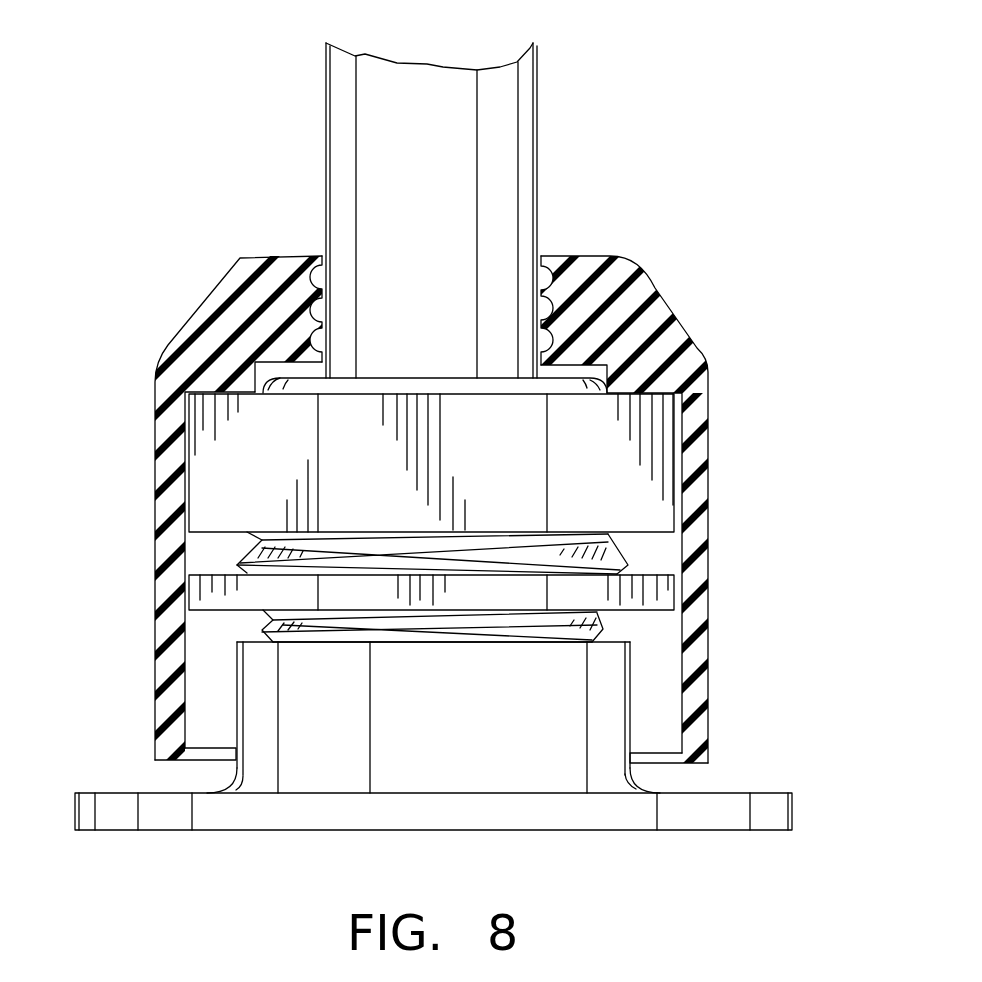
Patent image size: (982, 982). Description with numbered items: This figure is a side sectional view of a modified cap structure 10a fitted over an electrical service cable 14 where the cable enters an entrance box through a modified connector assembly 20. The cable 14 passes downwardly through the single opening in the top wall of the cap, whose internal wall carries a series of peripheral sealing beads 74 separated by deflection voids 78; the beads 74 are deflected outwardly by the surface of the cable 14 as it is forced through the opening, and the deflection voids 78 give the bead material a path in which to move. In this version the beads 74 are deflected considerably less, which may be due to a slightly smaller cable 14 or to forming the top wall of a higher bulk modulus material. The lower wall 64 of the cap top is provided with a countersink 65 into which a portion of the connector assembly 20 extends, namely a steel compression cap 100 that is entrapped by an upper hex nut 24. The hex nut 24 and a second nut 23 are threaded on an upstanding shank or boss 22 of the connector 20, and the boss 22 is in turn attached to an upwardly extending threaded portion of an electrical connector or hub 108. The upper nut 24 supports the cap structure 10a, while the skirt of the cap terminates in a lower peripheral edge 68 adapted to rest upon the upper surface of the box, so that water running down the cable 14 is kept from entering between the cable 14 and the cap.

The electrical service cable 14 is at (537, 108).
The peripheral beads 74 is at (546, 280).
The deflection void 78 is at (550, 298).
The modified cap structure 10a is at (682, 305).
The countersink 65 is at (256, 380).
The lower wall 64 is at (207, 397).
The steel compression cap 100 is at (584, 373).
The upper hex nut 24 is at (615, 462).
The nut 23 is at (637, 590).
The upstanding boss 22 is at (604, 630).
The electrical connector or hub 108 is at (558, 717).
The lower peripheral edge 68 is at (692, 763).
The connector assembly 20 is at (318, 748).